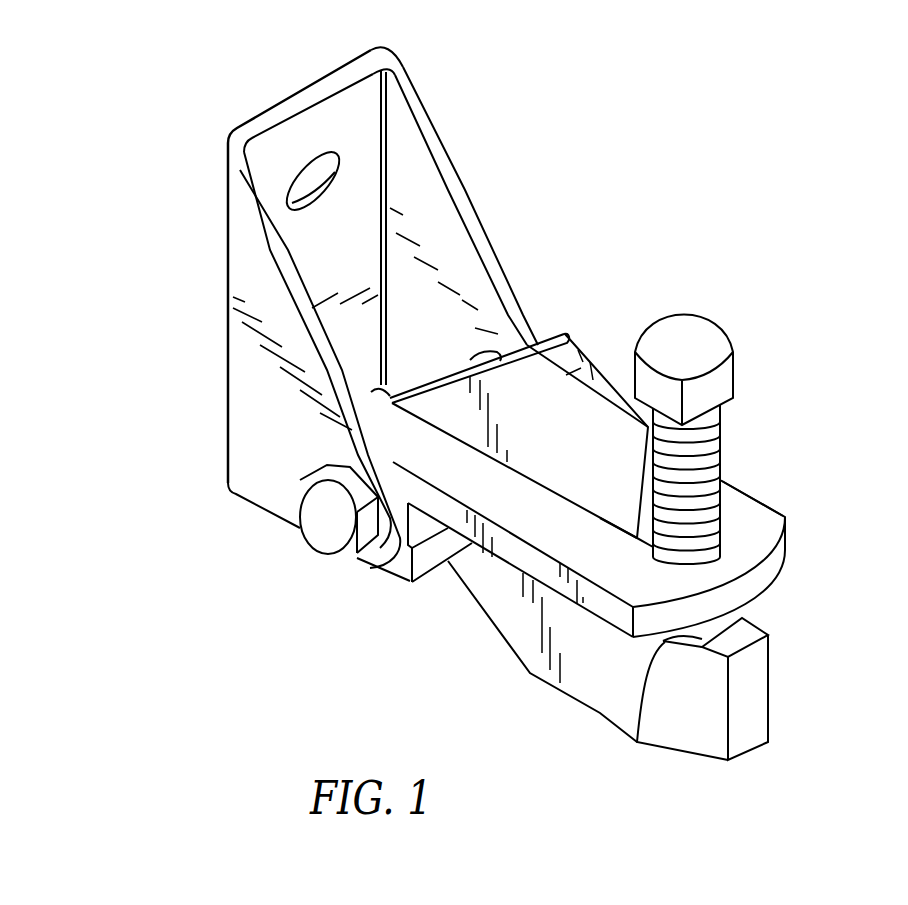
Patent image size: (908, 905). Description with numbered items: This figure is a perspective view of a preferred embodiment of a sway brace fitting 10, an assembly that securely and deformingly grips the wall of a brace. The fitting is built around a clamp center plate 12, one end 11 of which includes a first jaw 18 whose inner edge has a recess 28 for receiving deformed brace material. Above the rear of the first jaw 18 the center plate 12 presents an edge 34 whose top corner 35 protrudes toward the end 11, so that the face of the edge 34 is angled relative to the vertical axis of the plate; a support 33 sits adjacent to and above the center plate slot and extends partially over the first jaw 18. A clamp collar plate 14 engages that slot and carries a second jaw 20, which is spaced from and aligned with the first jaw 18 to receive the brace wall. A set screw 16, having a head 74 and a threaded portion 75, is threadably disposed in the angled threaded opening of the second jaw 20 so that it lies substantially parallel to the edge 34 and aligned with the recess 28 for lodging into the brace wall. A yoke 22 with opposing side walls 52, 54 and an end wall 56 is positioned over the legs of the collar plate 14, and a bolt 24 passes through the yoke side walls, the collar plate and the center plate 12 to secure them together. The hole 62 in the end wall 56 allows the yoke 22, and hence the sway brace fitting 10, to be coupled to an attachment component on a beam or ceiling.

The sway brace fitting 10 is at (773, 212).
The end of the clamp center plate 11 is at (712, 708).
The clamp center plate 12 is at (478, 626).
The clamp collar plate 14 is at (797, 508).
The set screw 16 is at (739, 421).
The first jaw 18 is at (613, 688).
The second jaw 20 is at (743, 550).
The yoke 22 is at (216, 262).
The bolt 24 is at (325, 517).
The recess 28 is at (637, 735).
The support 33 is at (608, 452).
The edge 34 is at (637, 533).
The top corner 35 is at (648, 440).
The side wall 52 is at (245, 372).
The side wall 54 is at (417, 187).
The end wall 56 is at (338, 105).
The hole 62 is at (306, 173).
The head 74 is at (685, 338).
The threaded portion 75 is at (697, 487).